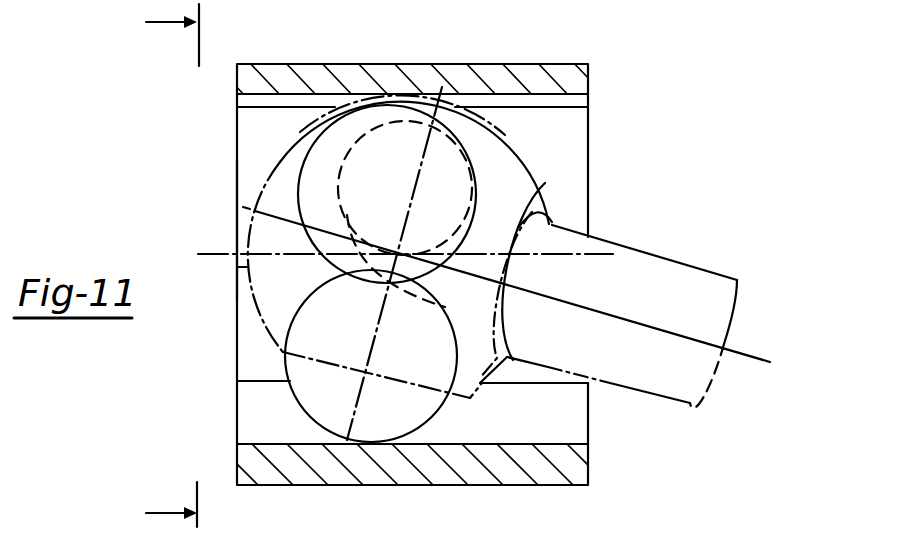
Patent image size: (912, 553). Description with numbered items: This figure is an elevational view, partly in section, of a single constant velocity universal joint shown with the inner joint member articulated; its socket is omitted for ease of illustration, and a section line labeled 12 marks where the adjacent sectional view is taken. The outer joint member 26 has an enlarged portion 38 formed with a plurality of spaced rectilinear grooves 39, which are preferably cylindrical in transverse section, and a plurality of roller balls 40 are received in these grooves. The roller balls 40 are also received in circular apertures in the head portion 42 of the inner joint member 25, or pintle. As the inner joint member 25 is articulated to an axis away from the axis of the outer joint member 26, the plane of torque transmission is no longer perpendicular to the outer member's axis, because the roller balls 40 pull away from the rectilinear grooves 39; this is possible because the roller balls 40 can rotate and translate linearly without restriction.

The section line 12- 12 is at (155, 268).
The inner joint member 25 is at (634, 283).
The outer joint member 26 is at (385, 64).
The enlarged portion 38 is at (248, 175).
The rectilinear grooves 39 is at (247, 100).
The roller balls 40 is at (350, 168).
The head portion 42 is at (262, 292).